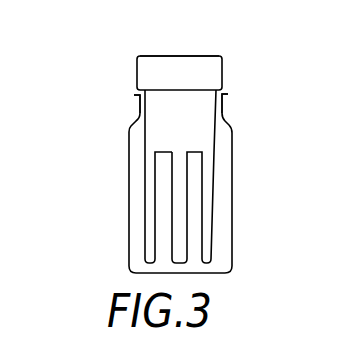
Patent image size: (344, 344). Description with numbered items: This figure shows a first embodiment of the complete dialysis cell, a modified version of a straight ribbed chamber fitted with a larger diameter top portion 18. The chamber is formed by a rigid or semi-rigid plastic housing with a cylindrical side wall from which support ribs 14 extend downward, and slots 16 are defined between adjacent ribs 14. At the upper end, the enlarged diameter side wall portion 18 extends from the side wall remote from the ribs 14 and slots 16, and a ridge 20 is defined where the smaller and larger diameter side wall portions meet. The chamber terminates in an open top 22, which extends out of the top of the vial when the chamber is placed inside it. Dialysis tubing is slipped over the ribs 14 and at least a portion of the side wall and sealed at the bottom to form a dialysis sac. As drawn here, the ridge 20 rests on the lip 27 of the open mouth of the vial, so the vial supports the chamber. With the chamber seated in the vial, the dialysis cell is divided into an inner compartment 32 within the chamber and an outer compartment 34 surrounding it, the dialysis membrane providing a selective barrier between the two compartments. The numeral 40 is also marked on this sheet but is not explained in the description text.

The support ribs 14 is at (178, 242).
The slots 16 is at (157, 199).
The enlarged diameter side wall portion 18 is at (213, 77).
The ridge 20 is at (226, 96).
The open top 22 is at (193, 56).
The lip 27 is at (138, 96).
The inner compartment 32 is at (193, 128).
The outer compartment 34 is at (223, 205).
The housing 40 is at (343, 343).